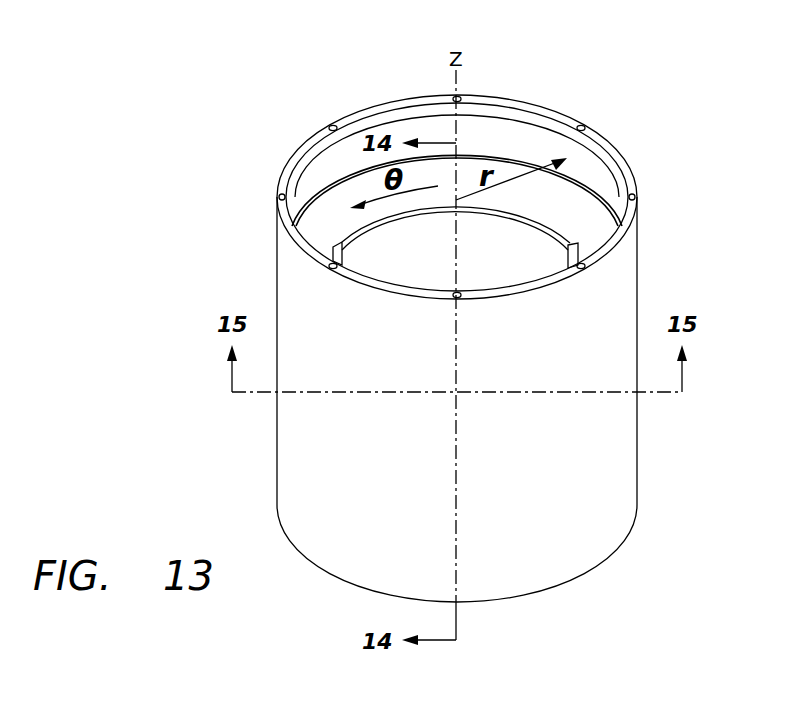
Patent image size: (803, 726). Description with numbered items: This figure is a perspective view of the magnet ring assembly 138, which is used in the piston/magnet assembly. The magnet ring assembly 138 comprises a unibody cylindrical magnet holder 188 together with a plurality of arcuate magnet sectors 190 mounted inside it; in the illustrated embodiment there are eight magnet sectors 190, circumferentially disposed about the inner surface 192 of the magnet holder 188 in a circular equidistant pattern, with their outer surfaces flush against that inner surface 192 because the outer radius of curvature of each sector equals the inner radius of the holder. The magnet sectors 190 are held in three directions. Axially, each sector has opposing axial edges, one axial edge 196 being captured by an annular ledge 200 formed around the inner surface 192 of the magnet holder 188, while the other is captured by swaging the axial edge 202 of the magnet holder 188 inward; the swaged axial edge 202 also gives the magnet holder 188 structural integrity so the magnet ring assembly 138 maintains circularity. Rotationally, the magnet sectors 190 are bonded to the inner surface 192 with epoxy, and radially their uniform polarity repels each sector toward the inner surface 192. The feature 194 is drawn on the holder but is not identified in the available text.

The magnet ring assembly 138 is at (553, 82).
The magnet holder 188 is at (290, 282).
The magnet sectors 190 is at (510, 267).
The inner surface 192 is at (313, 184).
The outer cylindrical wall 194 is at (625, 276).
The axial edge 196 is at (341, 240).
The annular ledge 200 is at (550, 222).
The axial edge 202 is at (583, 584).